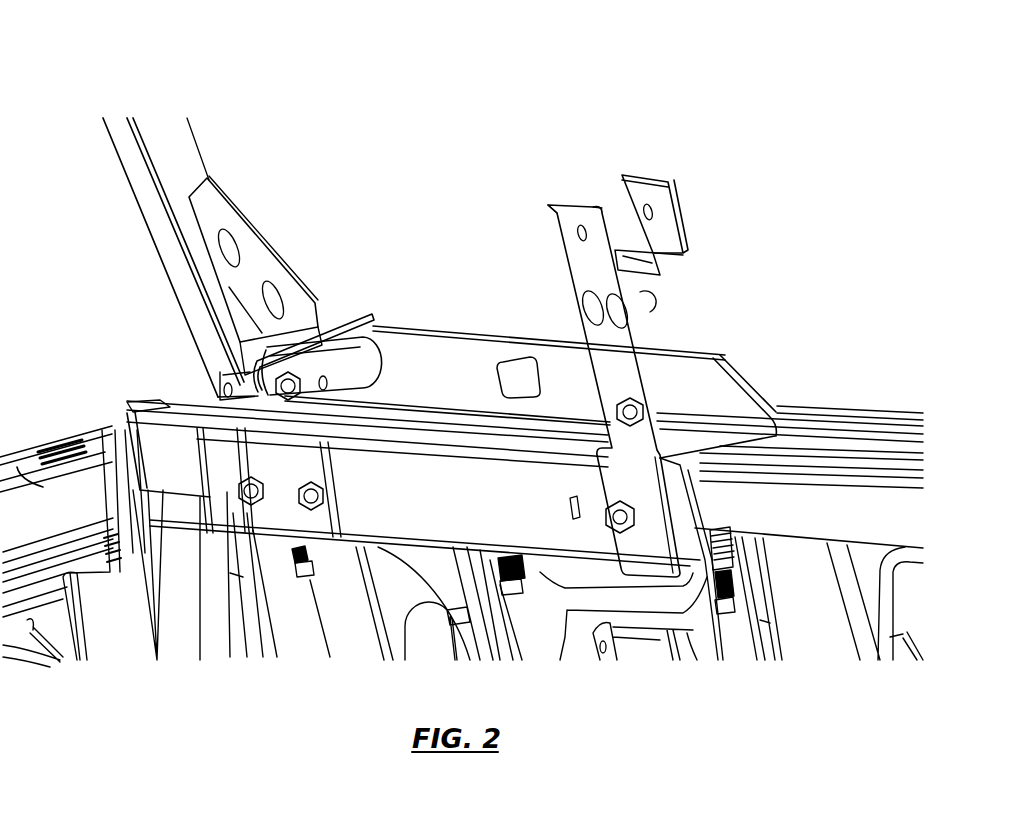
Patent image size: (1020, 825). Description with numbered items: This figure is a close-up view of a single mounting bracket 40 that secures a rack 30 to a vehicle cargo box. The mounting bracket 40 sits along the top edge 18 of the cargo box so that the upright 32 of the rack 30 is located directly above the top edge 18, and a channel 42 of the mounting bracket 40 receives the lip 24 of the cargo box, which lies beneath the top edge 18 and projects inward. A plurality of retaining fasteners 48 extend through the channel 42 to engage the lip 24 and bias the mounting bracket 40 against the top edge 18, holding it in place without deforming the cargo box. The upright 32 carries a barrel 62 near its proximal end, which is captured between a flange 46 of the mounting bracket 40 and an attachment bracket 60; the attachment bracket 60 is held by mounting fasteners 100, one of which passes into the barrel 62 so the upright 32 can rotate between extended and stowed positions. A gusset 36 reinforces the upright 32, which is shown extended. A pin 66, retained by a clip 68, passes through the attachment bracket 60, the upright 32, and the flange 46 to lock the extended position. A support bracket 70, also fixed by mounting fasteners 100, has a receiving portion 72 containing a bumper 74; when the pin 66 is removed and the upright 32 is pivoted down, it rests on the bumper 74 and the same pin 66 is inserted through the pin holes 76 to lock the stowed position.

The top edge 18 is at (823, 448).
The lip 24 is at (774, 542).
The rack 30 is at (110, 92).
The upright 32 is at (135, 176).
The gusset 36 is at (253, 250).
The mounting bracket 40 is at (452, 330).
The channel 42 is at (714, 532).
The flange 46 is at (508, 352).
The retaining fasteners 48 is at (312, 568).
The attachment bracket 60 is at (262, 453).
The barrel 62 is at (350, 377).
The pin 66 is at (237, 390).
The clip 68 is at (360, 320).
The support bracket 70 is at (580, 260).
The receiving portion 72 is at (610, 200).
The bumper 74 is at (637, 253).
The pin holes 76 is at (580, 230).
The mounting fasteners 100 is at (318, 494).